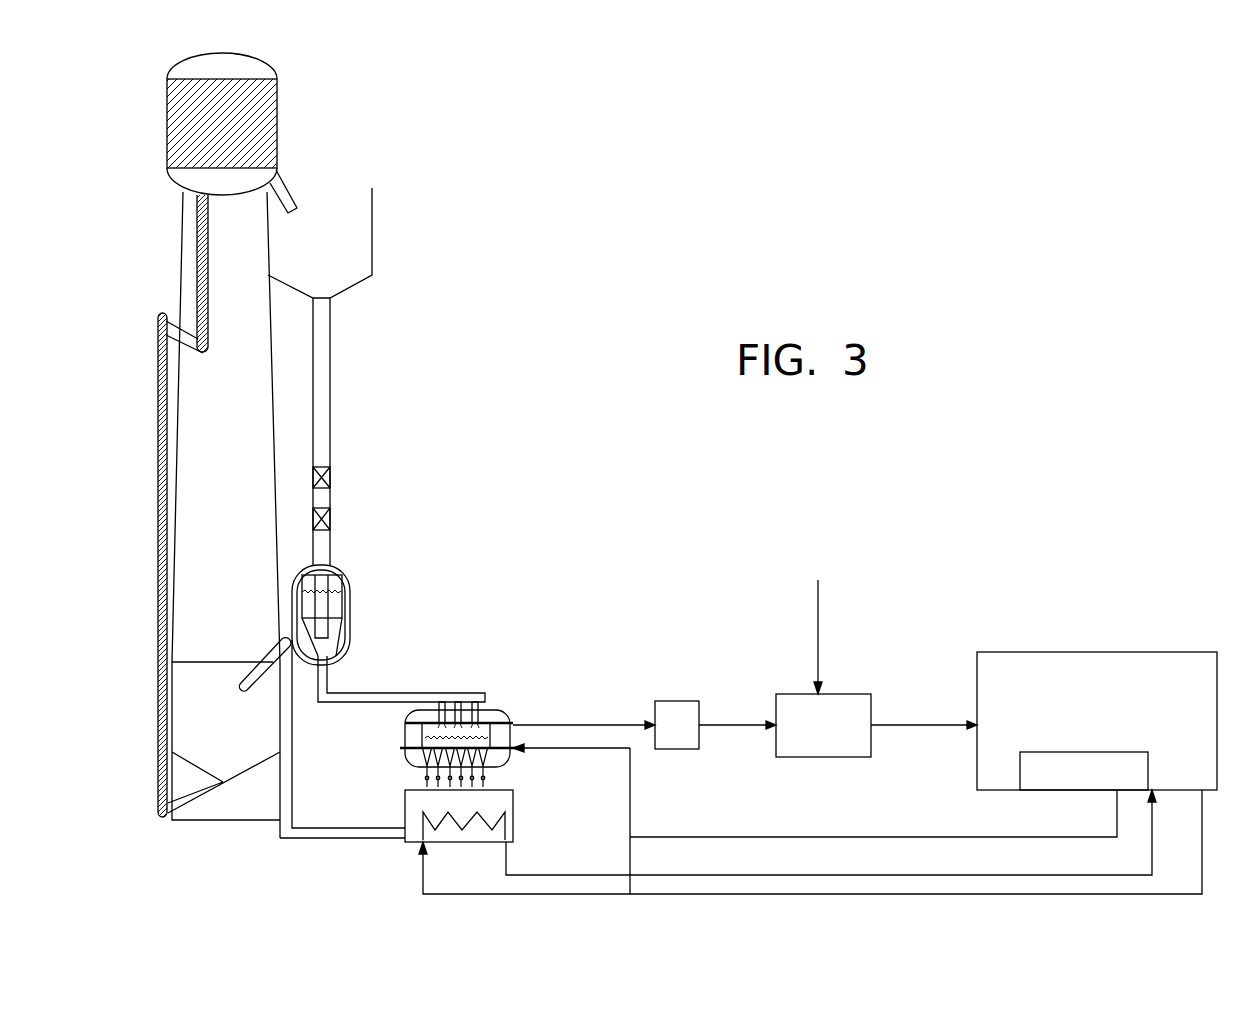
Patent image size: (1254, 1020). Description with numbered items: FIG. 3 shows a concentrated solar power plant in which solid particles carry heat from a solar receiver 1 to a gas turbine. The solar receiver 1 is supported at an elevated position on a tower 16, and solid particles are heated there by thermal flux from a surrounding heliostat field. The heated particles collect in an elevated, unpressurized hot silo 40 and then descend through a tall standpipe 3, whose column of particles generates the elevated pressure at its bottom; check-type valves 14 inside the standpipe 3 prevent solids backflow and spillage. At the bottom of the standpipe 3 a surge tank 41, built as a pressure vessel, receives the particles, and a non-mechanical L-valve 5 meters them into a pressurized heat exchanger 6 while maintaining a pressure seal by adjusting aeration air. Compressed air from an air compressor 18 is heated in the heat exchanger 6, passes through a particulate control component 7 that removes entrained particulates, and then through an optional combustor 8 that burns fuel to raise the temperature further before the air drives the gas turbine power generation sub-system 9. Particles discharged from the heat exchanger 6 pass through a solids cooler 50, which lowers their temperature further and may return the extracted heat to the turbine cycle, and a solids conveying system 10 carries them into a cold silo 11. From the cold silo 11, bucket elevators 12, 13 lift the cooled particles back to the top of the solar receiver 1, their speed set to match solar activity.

The solar receiver 1 is at (279, 86).
The standpipe 3 is at (338, 413).
The L-valve 5 is at (413, 690).
The pressurized heat exchanger 6 is at (394, 737).
The particulate control component 7 is at (678, 697).
The combustor 8 is at (836, 680).
The gas turbine power generation sub-system 9 is at (1092, 725).
The solids conveying system 10 is at (376, 836).
The cold silo 11 is at (209, 744).
The bucket elevator 12 is at (147, 550).
The bucket elevator 13 is at (173, 222).
The valves 14 is at (344, 494).
The tower 16 is at (213, 477).
The air compressor 18 is at (1073, 781).
The hot silo 40 is at (304, 269).
The surge tank 41 is at (360, 588).
The solids cooler 50 is at (533, 812).